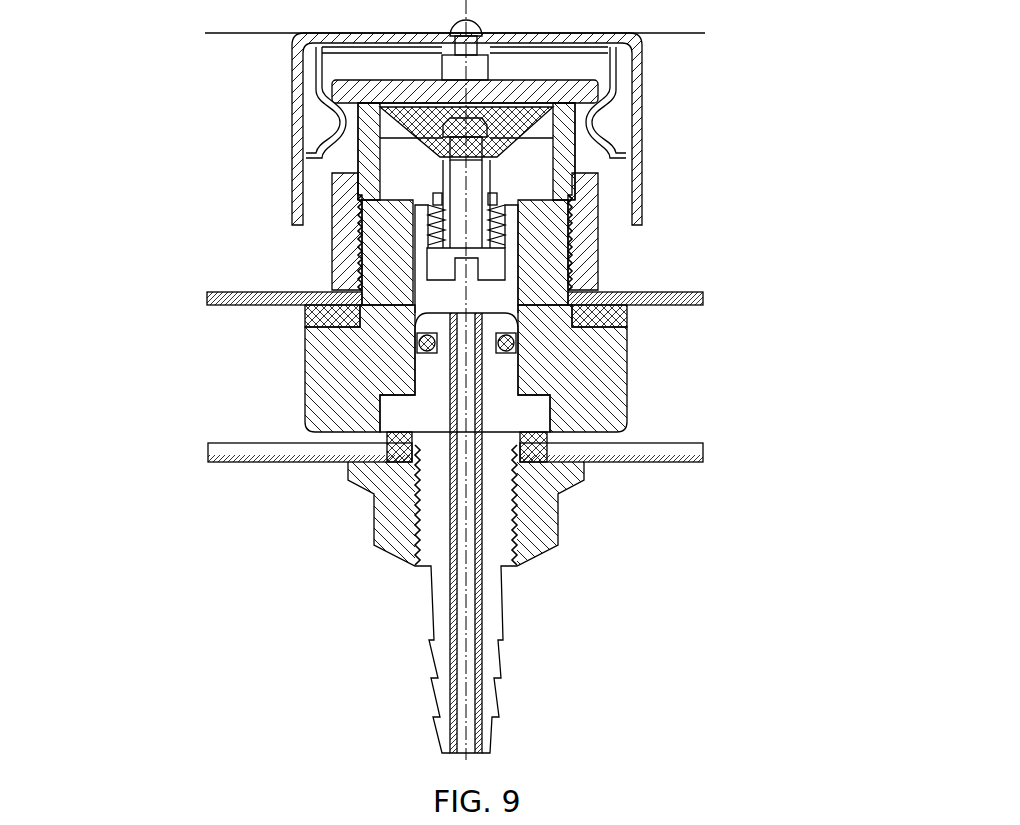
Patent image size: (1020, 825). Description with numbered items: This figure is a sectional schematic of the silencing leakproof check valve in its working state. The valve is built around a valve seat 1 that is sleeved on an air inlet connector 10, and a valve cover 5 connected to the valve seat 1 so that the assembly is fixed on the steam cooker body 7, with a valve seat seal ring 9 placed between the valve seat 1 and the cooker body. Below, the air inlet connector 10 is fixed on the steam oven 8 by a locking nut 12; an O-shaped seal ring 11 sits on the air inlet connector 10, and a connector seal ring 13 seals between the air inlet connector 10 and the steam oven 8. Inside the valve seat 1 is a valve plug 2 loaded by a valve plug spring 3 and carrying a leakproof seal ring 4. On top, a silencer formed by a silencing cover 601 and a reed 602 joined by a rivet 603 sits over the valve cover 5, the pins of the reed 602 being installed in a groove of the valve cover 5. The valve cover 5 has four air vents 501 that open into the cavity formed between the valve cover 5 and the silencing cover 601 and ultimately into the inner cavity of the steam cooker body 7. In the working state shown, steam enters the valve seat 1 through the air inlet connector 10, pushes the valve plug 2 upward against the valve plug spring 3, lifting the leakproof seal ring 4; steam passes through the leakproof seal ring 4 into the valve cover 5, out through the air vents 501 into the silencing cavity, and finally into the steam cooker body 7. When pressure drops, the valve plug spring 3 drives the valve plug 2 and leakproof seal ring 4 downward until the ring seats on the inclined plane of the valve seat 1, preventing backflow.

The valve seat 1 is at (588, 378).
The valve plug 2 is at (478, 187).
The valve plug spring 3 is at (492, 230).
The leakproof seal ring 4 is at (578, 150).
The valve cover 5 is at (577, 90).
The steam cooker body 7 is at (207, 297).
The steam oven 8 is at (300, 450).
The valve seat seal ring 9 is at (597, 318).
The air inlet connector 10 is at (627, 432).
The O-shaped seal ring 11 is at (420, 344).
The locking nut 12 is at (557, 532).
The connector seal ring 13 is at (600, 462).
The air vents 501 is at (332, 188).
The silencing cover 601 is at (297, 140).
The reed 602 is at (310, 93).
The rivet 603 is at (483, 25).